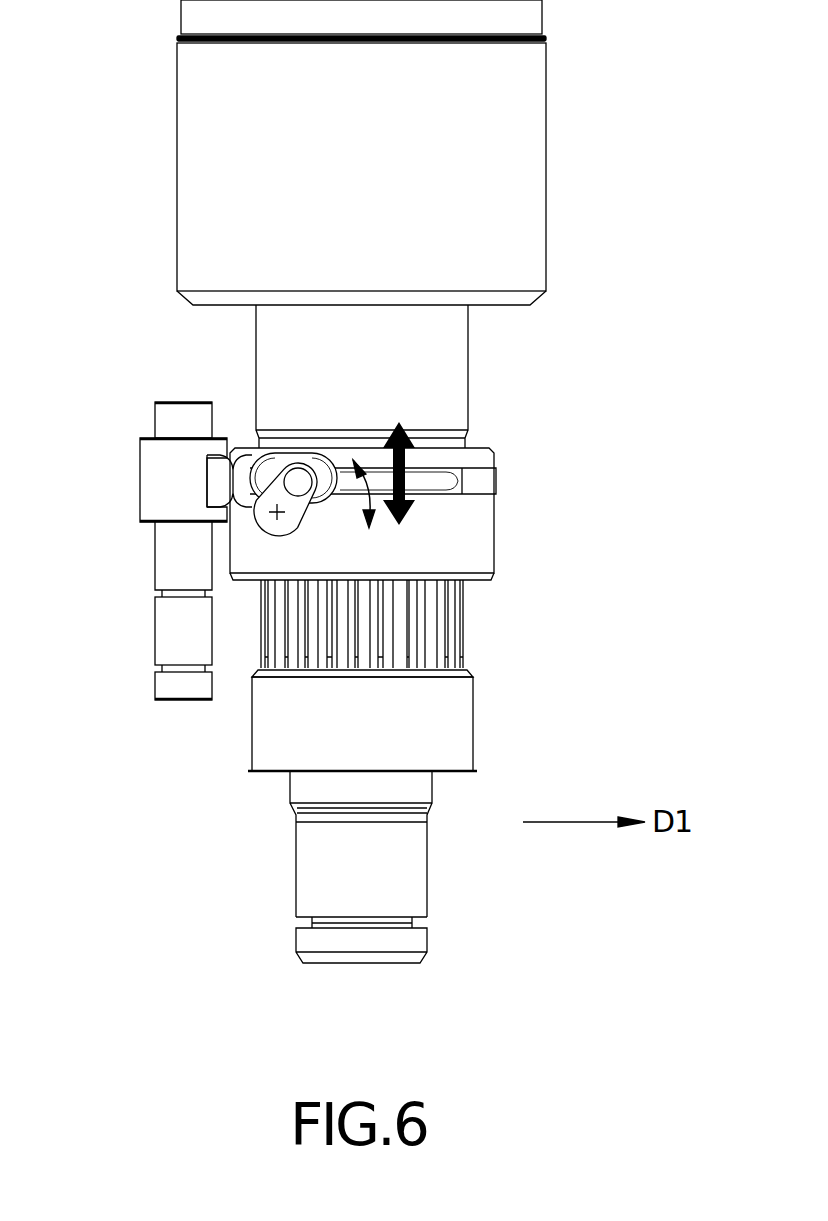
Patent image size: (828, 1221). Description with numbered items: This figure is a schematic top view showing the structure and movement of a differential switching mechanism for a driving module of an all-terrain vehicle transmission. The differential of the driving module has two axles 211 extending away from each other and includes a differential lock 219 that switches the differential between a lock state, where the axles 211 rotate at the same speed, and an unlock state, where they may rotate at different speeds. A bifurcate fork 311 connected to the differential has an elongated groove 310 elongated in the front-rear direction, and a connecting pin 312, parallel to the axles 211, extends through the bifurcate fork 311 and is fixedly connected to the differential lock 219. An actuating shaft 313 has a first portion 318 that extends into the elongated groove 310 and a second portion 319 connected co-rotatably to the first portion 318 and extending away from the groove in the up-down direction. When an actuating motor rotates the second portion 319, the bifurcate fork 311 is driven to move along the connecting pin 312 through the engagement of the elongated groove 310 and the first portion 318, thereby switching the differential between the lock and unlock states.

The axle 211 is at (298, 933).
The differential lock 219 is at (482, 542).
The elongated groove 310 is at (330, 477).
The bifurcate fork 311 is at (492, 475).
The connecting pin 312 is at (168, 627).
The actuating shaft 313 is at (208, 480).
The first portion 318 is at (297, 488).
The second portion 319 is at (260, 530).